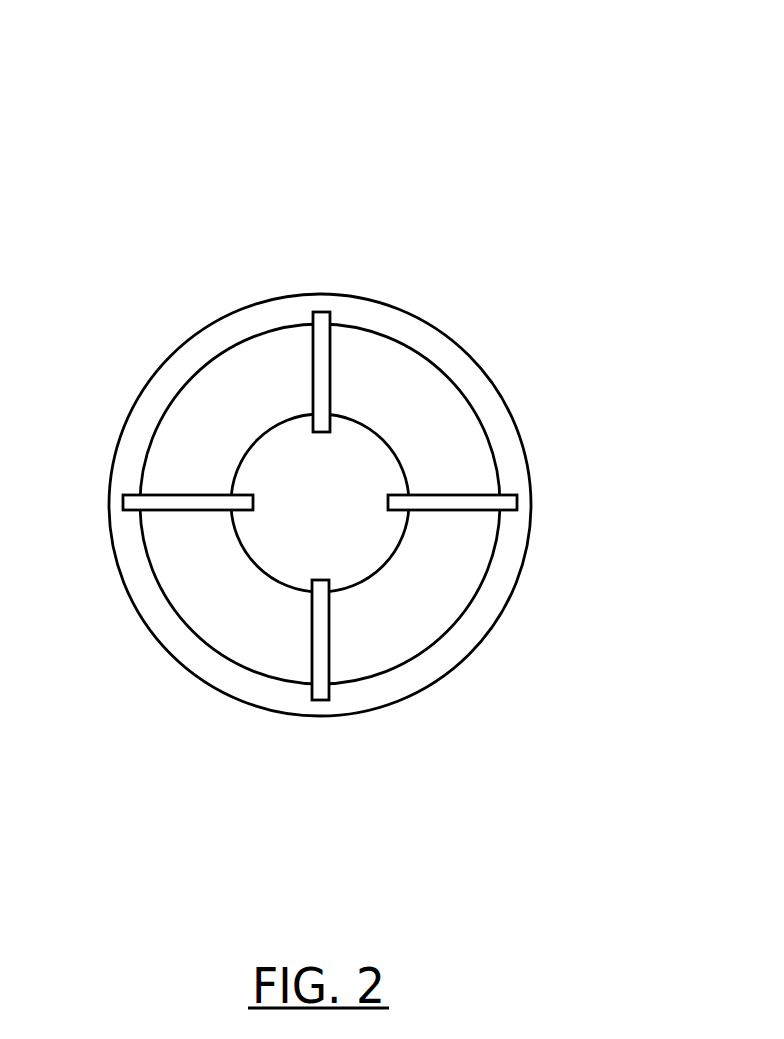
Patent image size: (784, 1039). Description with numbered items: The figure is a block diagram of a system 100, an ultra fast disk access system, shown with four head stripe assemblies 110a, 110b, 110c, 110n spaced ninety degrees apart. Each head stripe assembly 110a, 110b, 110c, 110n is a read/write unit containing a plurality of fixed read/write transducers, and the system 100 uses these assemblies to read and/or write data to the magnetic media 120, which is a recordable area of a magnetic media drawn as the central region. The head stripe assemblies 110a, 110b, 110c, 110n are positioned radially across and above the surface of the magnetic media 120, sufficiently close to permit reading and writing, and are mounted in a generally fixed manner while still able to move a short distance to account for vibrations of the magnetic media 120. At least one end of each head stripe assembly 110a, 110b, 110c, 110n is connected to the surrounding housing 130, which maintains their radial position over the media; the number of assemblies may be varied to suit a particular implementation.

The system 100 is at (183, 58).
The head stripe assembly 110a is at (506, 502).
The head stripe assembly 110b is at (319, 318).
The head stripe assembly 110c is at (134, 502).
The head stripe assembly 110n is at (320, 692).
The magnetic media 120 is at (430, 397).
The housing 130 is at (182, 648).